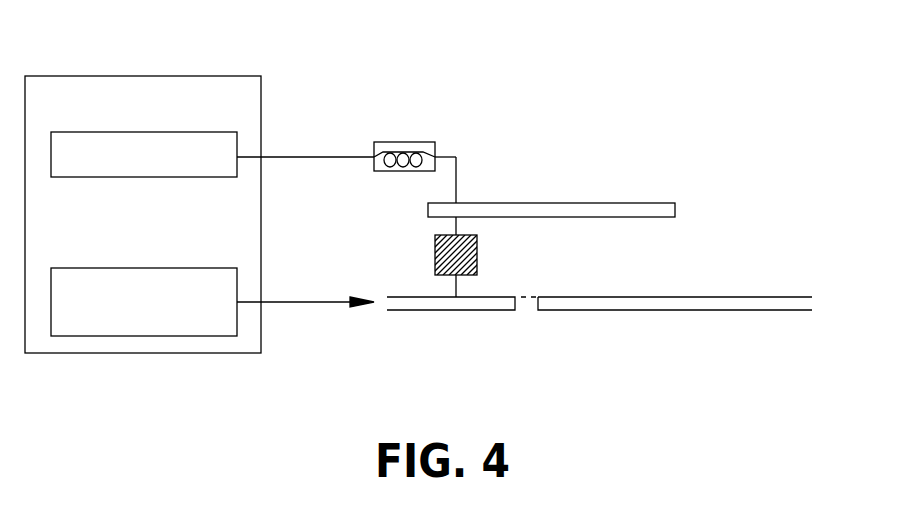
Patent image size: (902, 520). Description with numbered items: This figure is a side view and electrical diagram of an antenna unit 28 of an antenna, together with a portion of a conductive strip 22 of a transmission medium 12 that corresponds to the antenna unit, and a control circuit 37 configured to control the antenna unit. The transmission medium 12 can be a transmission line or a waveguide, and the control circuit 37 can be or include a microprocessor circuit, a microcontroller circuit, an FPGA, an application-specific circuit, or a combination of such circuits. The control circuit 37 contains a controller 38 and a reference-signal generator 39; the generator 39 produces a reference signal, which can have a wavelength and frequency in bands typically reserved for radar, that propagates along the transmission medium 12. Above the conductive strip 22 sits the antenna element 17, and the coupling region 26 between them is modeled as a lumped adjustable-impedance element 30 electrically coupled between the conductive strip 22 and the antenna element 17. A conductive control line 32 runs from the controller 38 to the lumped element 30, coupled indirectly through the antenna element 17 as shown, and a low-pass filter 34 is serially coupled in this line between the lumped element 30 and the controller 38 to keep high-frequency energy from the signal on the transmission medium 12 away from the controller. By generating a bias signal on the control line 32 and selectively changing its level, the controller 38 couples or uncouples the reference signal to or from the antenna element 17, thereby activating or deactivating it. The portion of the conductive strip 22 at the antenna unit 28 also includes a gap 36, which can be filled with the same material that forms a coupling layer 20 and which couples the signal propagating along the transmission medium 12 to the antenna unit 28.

The transmission medium 12 is at (782, 260).
The antenna element 17 is at (527, 203).
The coupling layer 20 is at (683, 244).
The conductive strip 22 is at (806, 302).
The coupling region 26 is at (552, 277).
The antenna unit 28 is at (653, 80).
The lumped adjustable-impedance element 30 is at (435, 262).
The conductive control line 32 is at (357, 157).
The low-pass filter 34 is at (412, 142).
The gap 36 is at (522, 312).
The control circuit 37 is at (262, 244).
The controller 38 is at (92, 177).
The reference-signal generator 39 is at (157, 268).